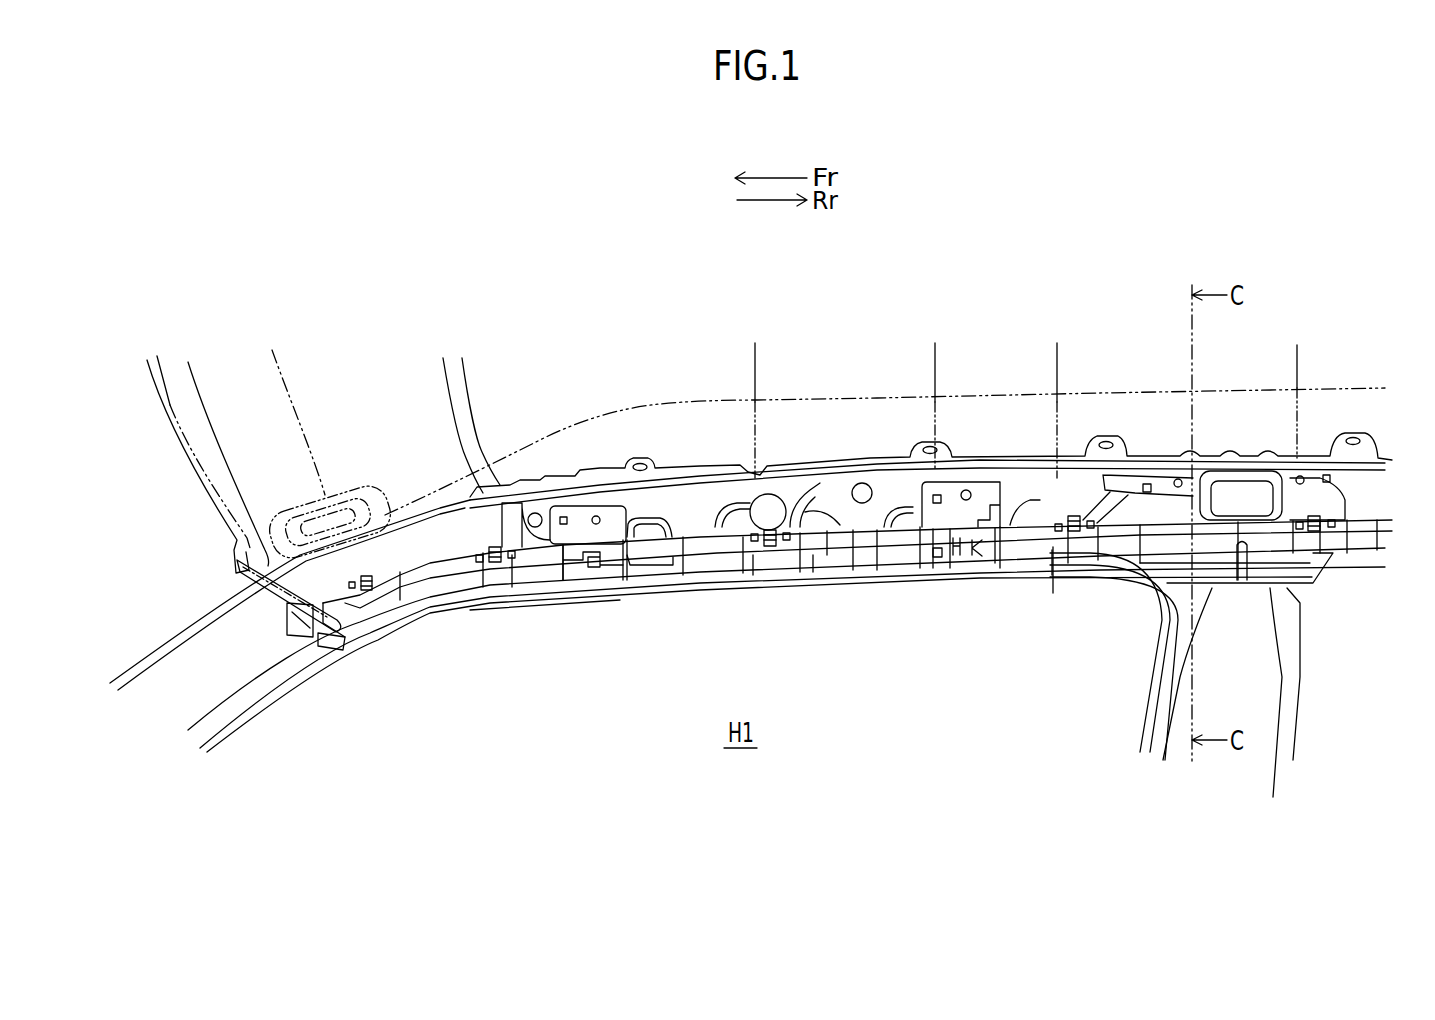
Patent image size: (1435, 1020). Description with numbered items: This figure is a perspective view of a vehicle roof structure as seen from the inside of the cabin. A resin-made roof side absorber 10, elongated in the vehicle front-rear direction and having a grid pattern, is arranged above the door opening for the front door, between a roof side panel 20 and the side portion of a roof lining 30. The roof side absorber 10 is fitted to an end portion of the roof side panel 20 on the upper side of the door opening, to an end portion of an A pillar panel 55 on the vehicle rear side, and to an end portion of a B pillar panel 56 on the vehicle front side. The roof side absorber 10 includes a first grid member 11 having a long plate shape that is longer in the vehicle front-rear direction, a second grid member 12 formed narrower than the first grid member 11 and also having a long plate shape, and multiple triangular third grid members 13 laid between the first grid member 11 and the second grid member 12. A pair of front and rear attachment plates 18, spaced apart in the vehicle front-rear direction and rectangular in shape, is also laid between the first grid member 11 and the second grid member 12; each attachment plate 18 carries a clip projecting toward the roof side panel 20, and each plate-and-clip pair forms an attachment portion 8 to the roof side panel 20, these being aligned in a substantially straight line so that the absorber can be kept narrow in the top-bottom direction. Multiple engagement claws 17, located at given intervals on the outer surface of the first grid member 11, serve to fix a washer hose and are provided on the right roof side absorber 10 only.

The roof side absorber 10 is at (849, 517).
The first grid member 11 is at (703, 545).
The second grid member 12 is at (712, 575).
The third grid member 13 is at (400, 600).
The engagement claw 17 is at (489, 535).
The attachment plate 18 is at (751, 578).
The attachment portion 8 is at (580, 568).
The roof side panel 20 is at (893, 473).
The roof lining 30 is at (163, 447).
The A pillar panel 55 is at (213, 662).
The B pillar panel 56 is at (1238, 697).